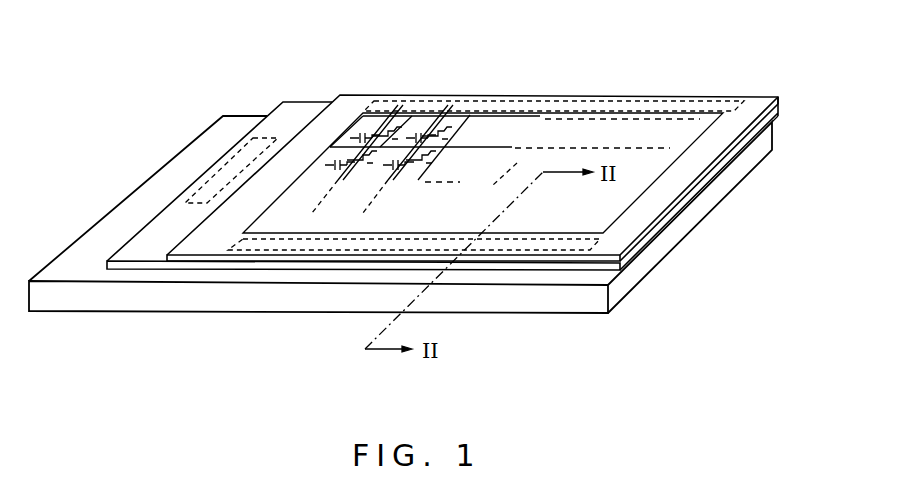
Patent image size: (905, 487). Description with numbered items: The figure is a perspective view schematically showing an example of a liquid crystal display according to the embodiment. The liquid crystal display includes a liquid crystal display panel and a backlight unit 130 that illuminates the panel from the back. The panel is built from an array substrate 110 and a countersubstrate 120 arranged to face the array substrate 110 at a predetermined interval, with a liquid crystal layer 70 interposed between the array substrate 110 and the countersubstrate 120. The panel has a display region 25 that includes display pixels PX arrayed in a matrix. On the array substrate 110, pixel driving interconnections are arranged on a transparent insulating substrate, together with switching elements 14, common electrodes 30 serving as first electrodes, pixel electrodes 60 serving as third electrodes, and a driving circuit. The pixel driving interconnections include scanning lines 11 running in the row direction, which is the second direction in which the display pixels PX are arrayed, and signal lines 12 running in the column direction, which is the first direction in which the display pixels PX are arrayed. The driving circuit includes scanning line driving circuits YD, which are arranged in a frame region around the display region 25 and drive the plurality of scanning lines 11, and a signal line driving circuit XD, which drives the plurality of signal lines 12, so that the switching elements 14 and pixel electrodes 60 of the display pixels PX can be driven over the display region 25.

The array substrate 110 is at (172, 216).
The countersubstrate 120 is at (320, 128).
The backlight unit 130 is at (211, 300).
The scanning line 11 is at (393, 117).
The signal line 12 is at (518, 146).
The switching element 14 is at (441, 165).
The display region 25 is at (687, 142).
The common electrode 30 is at (366, 173).
The pixel electrode 60 is at (400, 172).
The liquid crystal layer 70 is at (394, 172).
The display pixel PX is at (386, 115).
The signal line driving circuit XD is at (258, 138).
The scanning line driving circuit YD is at (703, 106).